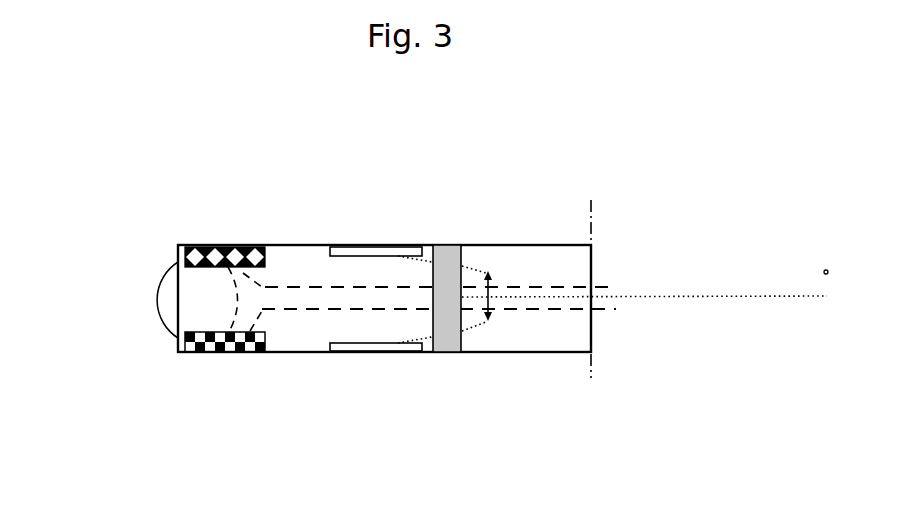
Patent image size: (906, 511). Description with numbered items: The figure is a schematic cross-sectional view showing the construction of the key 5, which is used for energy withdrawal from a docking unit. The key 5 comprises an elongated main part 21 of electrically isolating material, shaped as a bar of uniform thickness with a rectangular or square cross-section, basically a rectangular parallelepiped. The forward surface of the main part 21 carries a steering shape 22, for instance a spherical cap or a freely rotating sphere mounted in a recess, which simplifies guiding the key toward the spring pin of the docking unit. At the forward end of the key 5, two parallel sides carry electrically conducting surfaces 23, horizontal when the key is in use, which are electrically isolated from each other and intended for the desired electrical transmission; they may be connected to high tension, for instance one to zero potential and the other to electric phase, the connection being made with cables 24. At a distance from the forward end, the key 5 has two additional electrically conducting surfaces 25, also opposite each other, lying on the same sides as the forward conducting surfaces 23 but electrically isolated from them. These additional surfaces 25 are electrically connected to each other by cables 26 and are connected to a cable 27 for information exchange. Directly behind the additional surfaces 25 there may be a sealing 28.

The key 5 is at (652, 130).
The main part 21 is at (302, 252).
The steering shape 22 is at (166, 302).
The electrically conducting surfaces 23 is at (230, 247).
The cables 24 is at (303, 312).
The additional electrically conducting surfaces 25 is at (387, 236).
The cables 26 is at (467, 325).
The cable 27 is at (542, 298).
The sealing 28 is at (447, 265).